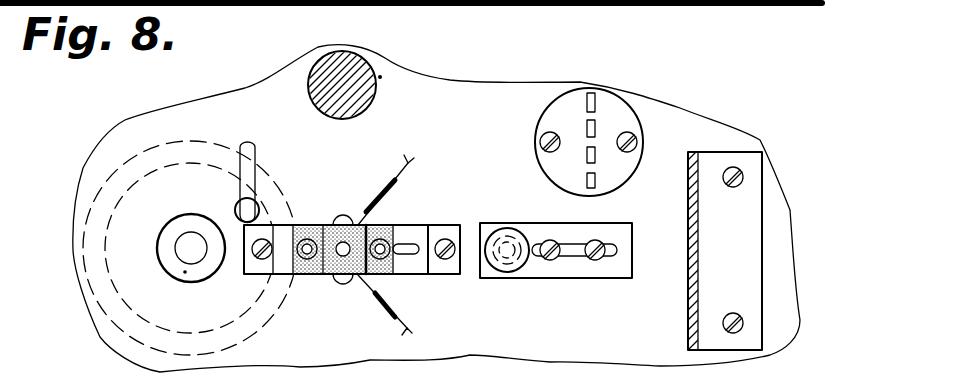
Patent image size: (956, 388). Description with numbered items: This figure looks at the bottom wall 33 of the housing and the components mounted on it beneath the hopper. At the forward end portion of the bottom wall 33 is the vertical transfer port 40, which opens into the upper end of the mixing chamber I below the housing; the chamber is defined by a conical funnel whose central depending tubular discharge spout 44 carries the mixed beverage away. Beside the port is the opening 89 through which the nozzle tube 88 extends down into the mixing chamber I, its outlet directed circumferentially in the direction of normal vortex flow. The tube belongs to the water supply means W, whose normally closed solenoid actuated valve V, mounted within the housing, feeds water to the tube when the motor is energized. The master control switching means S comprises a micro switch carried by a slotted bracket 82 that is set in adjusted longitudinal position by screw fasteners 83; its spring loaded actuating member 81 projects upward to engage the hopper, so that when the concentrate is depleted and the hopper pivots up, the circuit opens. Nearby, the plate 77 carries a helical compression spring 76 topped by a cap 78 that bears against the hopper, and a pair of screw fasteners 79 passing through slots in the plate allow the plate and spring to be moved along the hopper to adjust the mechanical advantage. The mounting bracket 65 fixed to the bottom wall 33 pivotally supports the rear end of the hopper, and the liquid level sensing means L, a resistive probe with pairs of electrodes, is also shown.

The bottom wall 33 is at (495, 85).
The vertical transfer port 40 is at (170, 228).
The tubular discharge spout 44 is at (190, 240).
The mixing chamber I is at (185, 272).
The solenoid actuated valve V is at (380, 77).
The water supply means W is at (272, 113).
The nozzle tube 88 is at (255, 148).
The opening 89 is at (240, 208).
The actuating member 81 is at (373, 223).
The slotted bracket 82 is at (415, 275).
The screw fasteners 83 is at (402, 222).
The master control switching means S is at (323, 280).
The liquid level sensing means L is at (626, 112).
The helical compression spring 76 is at (527, 223).
The plate 77 is at (605, 270).
The cap 78 is at (503, 278).
The screw fasteners 79 is at (555, 258).
The mounting bracket 65 is at (698, 238).